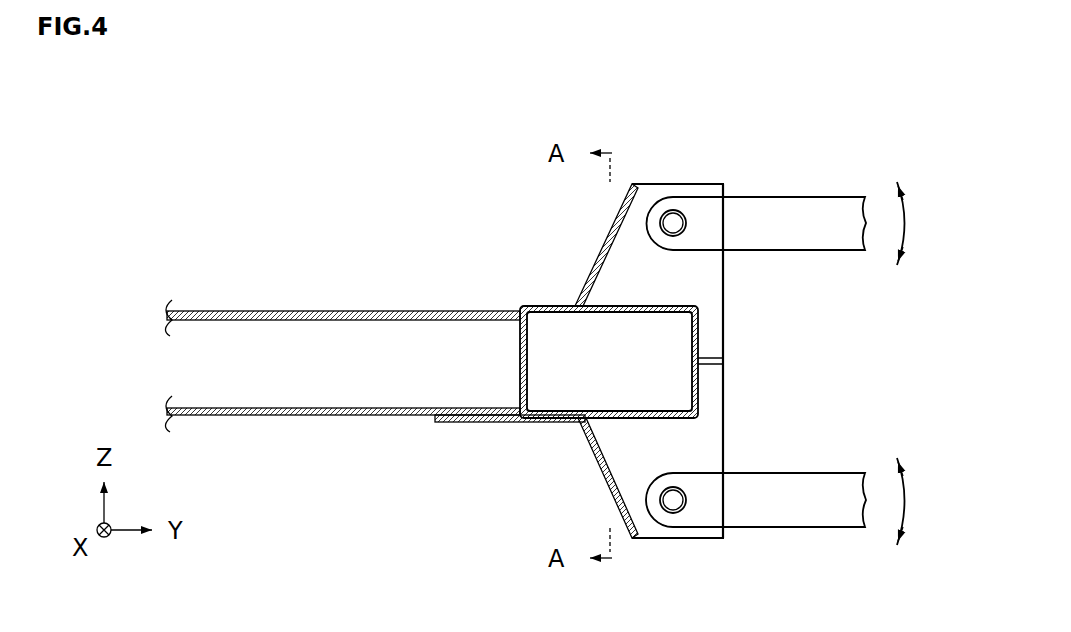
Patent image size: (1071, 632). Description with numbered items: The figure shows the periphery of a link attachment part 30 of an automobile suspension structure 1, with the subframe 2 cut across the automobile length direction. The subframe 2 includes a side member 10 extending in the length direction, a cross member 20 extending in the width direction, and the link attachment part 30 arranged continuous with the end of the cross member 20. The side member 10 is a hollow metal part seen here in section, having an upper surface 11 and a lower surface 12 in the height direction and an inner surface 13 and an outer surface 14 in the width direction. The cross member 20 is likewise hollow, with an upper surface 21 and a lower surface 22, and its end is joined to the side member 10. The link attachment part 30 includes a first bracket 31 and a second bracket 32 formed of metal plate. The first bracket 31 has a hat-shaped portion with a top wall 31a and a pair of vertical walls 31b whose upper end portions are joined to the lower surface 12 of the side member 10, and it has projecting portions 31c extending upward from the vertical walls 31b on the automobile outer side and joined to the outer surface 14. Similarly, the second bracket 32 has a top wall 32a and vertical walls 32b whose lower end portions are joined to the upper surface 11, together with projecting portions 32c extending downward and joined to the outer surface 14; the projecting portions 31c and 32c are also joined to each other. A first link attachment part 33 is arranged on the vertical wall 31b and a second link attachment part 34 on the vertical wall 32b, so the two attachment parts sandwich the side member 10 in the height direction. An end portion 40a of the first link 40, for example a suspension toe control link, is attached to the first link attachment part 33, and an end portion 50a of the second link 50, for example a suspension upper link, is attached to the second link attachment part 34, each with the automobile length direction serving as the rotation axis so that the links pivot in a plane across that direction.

The automobile suspension structure 1 is at (782, 121).
The subframe 2 is at (444, 236).
The side member 10 is at (564, 362).
The upper surface 11 is at (574, 318).
The lower surface 12 is at (652, 411).
The inner surface 13 is at (528, 392).
The outer surface 14 is at (690, 346).
The cross member 20 is at (342, 357).
The upper surface 21 is at (398, 311).
The lower surface 22 is at (396, 422).
The link attachment part 30 is at (645, 363).
The first bracket 31 is at (616, 484).
The top wall 31a is at (604, 478).
The vertical wall 31b is at (680, 438).
The projecting portion 31c is at (713, 386).
The second bracket 32 is at (659, 242).
The top wall 32a is at (603, 246).
The vertical wall 32b is at (680, 272).
The projecting portion 32c is at (713, 342).
The first link attachment part 33 is at (672, 514).
The second link attachment part 34 is at (671, 211).
The first link 40 is at (719, 530).
The end portion 40a is at (648, 500).
The second link 50 is at (719, 195).
The end portion 50a is at (648, 226).